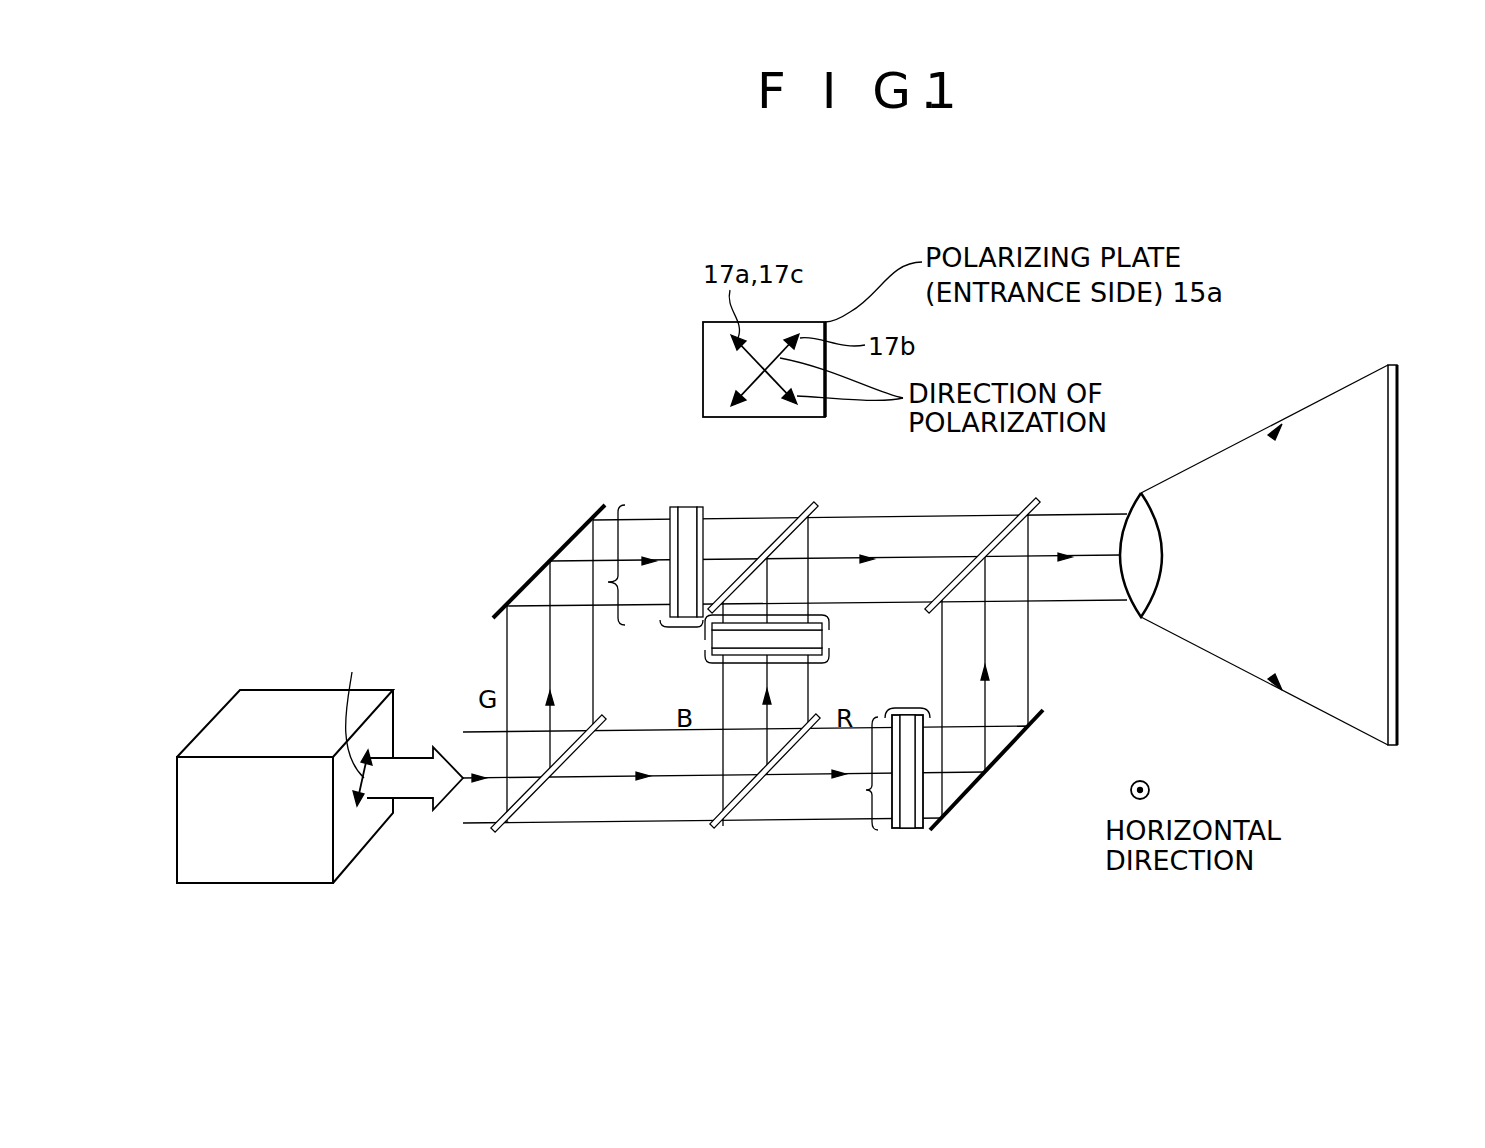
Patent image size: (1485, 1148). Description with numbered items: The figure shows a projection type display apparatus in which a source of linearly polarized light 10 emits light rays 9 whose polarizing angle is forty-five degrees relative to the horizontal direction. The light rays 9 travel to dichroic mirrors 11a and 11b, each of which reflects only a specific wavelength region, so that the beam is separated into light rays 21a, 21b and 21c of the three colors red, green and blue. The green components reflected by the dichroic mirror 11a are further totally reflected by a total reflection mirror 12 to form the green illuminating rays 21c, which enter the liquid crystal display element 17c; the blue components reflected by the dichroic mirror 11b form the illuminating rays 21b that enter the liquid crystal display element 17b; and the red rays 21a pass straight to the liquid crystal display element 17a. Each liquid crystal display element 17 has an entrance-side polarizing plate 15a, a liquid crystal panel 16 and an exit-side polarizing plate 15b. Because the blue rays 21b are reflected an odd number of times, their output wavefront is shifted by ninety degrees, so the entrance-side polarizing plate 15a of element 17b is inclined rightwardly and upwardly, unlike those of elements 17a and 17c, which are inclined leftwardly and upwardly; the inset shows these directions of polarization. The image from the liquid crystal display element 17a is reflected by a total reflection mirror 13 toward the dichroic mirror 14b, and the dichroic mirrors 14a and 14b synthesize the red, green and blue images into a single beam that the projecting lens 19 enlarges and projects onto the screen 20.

The light rays 9 is at (414, 758).
The source of linearly polarized light 10 is at (292, 884).
The dichroic mirror 11a is at (497, 834).
The dichroic mirror 11b is at (716, 830).
The total reflection mirror 12 is at (535, 572).
The total reflection mirror 13 is at (1006, 748).
The dichroic mirror 14a is at (818, 502).
The dichroic mirror 14b is at (1040, 498).
The entrance-side polarizing plate 15a is at (672, 507).
The polarizing plate (exit side) 15b is at (702, 507).
The liquid crystal panel 16 is at (686, 507).
The liquid crystal display element 17 is at (1008, 900).
The liquid crystal display element 17a is at (905, 708).
The liquid crystal display element 17b is at (706, 640).
The liquid crystal display element 17c is at (680, 627).
The projecting lens 19 is at (1141, 618).
The screen 20 is at (1395, 746).
The illuminating rays of red color 21a is at (868, 790).
The illuminating rays of blue color 21b is at (745, 665).
The illuminating rays of green color 21c is at (607, 582).